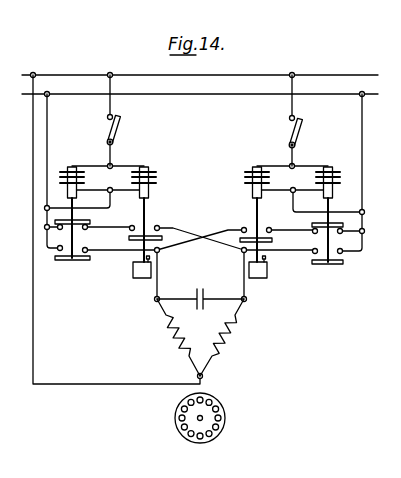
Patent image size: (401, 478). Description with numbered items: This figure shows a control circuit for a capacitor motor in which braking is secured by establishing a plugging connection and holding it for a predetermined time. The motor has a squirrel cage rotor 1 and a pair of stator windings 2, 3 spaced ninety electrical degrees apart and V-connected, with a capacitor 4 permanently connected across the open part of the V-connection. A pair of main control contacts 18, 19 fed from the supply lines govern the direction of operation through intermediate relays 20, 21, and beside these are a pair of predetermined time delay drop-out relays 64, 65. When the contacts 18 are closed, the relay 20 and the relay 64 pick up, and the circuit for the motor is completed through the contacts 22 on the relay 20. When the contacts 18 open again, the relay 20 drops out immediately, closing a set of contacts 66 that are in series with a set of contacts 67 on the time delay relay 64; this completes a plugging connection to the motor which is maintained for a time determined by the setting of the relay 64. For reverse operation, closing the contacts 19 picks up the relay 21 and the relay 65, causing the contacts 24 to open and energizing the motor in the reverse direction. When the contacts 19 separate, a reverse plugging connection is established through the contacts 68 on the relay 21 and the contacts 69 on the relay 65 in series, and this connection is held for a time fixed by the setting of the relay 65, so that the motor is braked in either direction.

The rotor 1 is at (223, 411).
The stator winding 2 is at (171, 342).
The stator winding 3 is at (228, 342).
The capacitor 4 is at (200, 288).
The main control contacts 18 is at (120, 130).
The main control contacts 19 is at (302, 133).
The intermediate relay 20 is at (71, 166).
The intermediate relay 21 is at (328, 166).
The contacts 22 is at (89, 257).
The contacts 24 is at (344, 262).
The time delay drop-out relay 64 is at (144, 166).
The time delay drop-out relay 65 is at (257, 166).
The contacts 66 is at (86, 230).
The contacts 67 is at (134, 227).
The contacts 68 is at (338, 231).
The contacts 69 is at (246, 228).